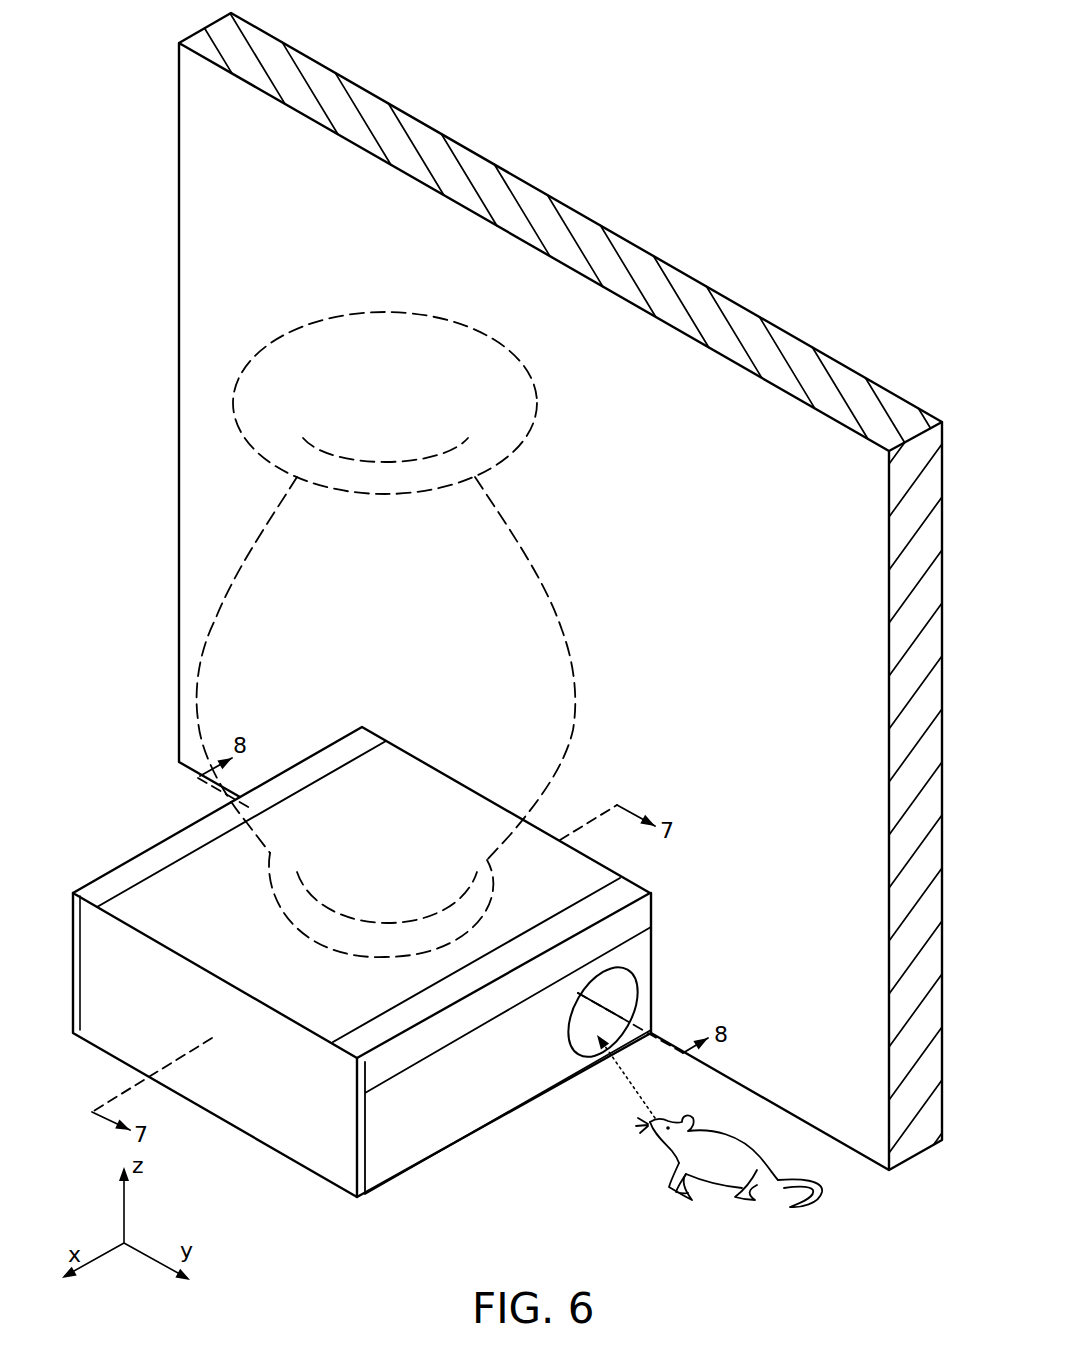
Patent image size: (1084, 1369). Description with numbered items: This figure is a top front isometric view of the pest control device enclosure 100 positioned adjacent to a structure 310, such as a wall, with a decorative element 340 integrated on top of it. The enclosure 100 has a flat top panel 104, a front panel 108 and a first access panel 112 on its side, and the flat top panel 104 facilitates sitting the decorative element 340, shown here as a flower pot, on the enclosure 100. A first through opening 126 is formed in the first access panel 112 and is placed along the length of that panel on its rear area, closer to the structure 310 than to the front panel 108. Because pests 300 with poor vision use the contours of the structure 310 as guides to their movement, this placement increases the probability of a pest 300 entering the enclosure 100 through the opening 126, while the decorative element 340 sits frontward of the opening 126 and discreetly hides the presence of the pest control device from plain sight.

The pest control device enclosure 100 is at (354, 962).
The top panel 104 is at (163, 890).
The front panel 108 is at (280, 1122).
The first access panel 112 is at (460, 1115).
The first through opening 126 is at (575, 1042).
The pest 300 is at (725, 1189).
The structure 310 is at (573, 209).
The decorative element 340 is at (547, 594).